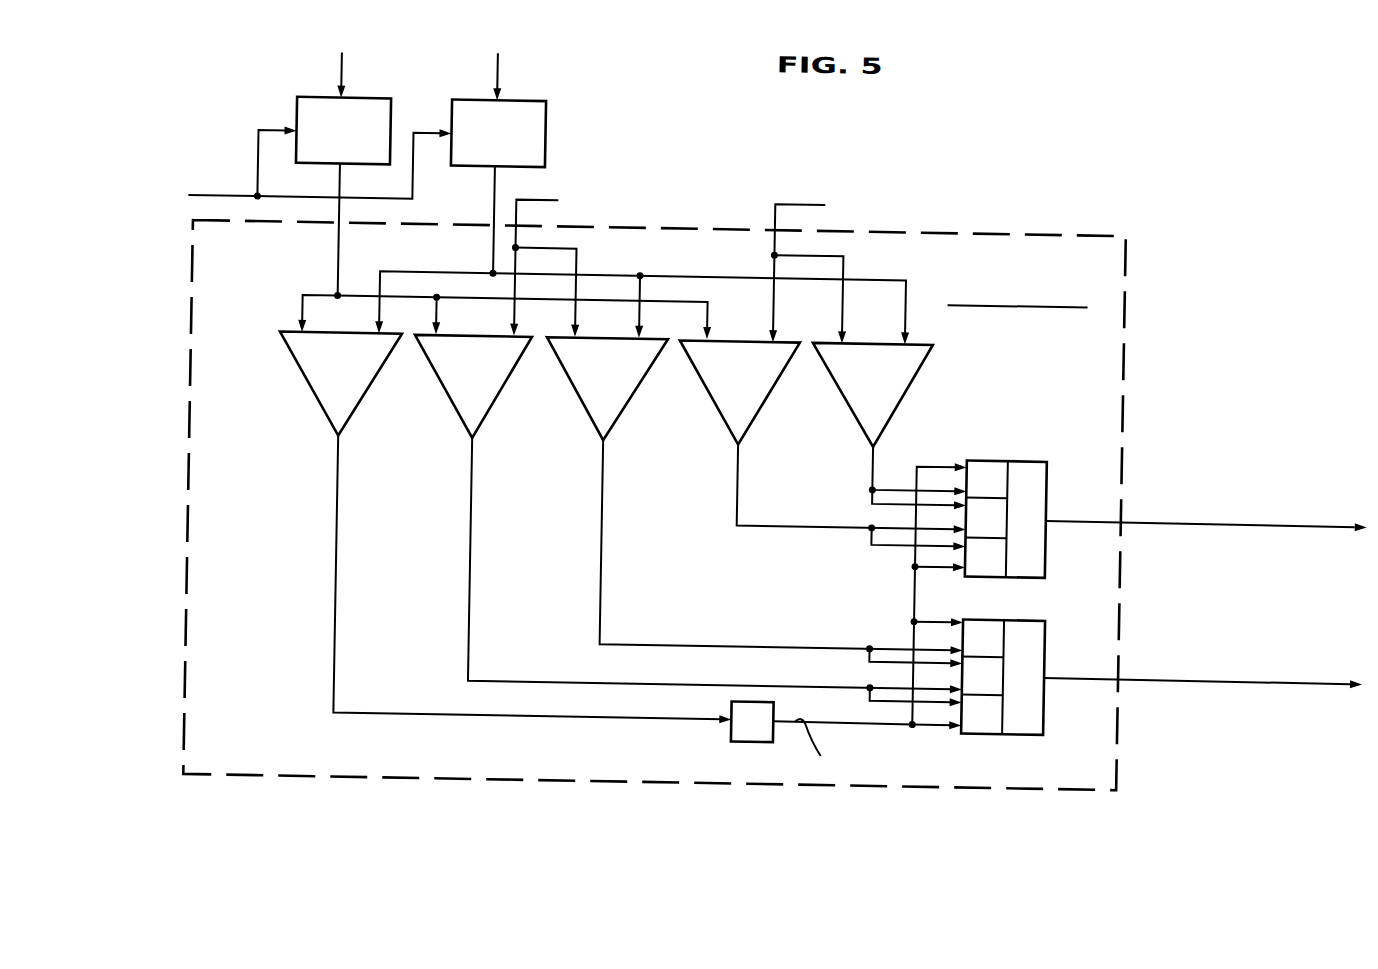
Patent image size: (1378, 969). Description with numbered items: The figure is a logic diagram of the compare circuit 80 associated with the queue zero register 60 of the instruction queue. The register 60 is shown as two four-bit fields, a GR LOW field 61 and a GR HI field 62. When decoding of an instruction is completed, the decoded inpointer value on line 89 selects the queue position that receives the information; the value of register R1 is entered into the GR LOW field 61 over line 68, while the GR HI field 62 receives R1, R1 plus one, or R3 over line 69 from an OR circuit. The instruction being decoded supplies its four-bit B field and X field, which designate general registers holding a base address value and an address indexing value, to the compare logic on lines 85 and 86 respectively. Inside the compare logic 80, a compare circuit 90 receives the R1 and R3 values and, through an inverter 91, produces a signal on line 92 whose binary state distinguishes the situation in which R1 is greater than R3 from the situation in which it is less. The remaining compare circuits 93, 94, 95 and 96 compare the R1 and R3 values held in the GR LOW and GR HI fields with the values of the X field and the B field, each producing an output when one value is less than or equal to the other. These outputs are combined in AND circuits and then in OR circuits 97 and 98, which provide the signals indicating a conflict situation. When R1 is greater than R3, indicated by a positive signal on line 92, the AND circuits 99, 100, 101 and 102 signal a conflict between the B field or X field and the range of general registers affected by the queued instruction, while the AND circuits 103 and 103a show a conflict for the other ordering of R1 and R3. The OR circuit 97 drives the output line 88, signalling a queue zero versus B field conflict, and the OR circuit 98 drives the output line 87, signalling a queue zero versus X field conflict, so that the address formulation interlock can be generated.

The register 60 is at (464, 115).
The GR LOW field 61 is at (385, 103).
The GR HI field 62 is at (540, 103).
The line 68 is at (335, 64).
The line 69 is at (491, 62).
The inpointer line 89 is at (236, 203).
The X2 field line 86 is at (533, 201).
The B2 field line 85 is at (801, 202).
The compare circuit 80 is at (1124, 283).
The compare circuit 90 is at (306, 388).
The compare circuit 93 is at (439, 386).
The compare circuit 94 is at (574, 389).
The compare circuit 95 is at (705, 392).
The compare circuit 96 is at (845, 393).
The inverter 91 is at (736, 706).
The signal line 92 is at (796, 720).
The OR circuit 97 is at (1049, 465).
The OR circuit 98 is at (1049, 656).
The AND circuit 99 is at (999, 729).
The AND circuit 100 is at (1003, 613).
The AND circuit 101 is at (987, 572).
The AND circuit 102 is at (993, 454).
The AND circuit 103 is at (967, 512).
The AND circuit 103a is at (966, 670).
The conflict signal line 88 is at (1278, 519).
The conflict signal line 87 is at (1268, 675).